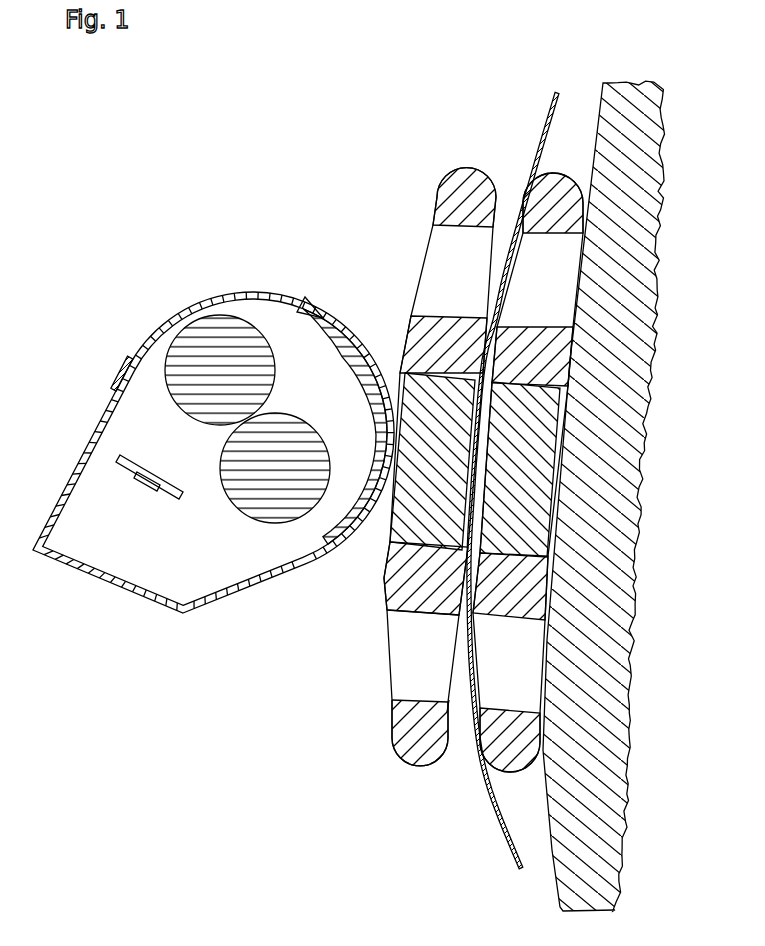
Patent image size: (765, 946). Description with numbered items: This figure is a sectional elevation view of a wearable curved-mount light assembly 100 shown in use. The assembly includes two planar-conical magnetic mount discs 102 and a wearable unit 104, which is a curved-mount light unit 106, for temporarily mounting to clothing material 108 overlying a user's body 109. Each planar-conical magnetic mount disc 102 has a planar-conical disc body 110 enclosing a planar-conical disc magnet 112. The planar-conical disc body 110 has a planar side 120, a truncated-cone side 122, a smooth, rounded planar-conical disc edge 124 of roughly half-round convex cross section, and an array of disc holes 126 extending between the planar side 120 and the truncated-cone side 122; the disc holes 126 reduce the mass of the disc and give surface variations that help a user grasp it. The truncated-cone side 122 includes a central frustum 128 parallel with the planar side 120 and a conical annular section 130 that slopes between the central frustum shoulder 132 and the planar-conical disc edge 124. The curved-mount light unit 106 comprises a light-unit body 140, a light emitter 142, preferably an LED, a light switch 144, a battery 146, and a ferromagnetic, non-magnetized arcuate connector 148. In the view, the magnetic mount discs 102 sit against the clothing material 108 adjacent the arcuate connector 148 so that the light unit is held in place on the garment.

The wearable curved-mount light assembly 100 is at (282, 177).
The planar-conical magnetic mount disc 102 is at (443, 182).
The wearable unit 104 is at (177, 253).
The curved-mount light unit 106 is at (163, 325).
The clothing material 108 is at (553, 110).
The user's body 109 is at (635, 112).
The planar-conical disc body 110 is at (535, 361).
The planar-conical disc magnet 112 is at (543, 450).
The planar side 120 is at (453, 713).
The truncated-cone side 122 is at (383, 593).
The planar-conical disc edge 124 is at (418, 767).
The disc holes 126 is at (405, 655).
The central frustum 128 is at (383, 523).
The conical annular section 130 is at (392, 705).
The central frustum shoulder 132 is at (403, 372).
The light-unit body 140 is at (98, 440).
The light emitter 142 is at (143, 483).
The light switch 144 is at (130, 370).
The battery 146 is at (207, 353).
The arcuate connector 148 is at (320, 312).